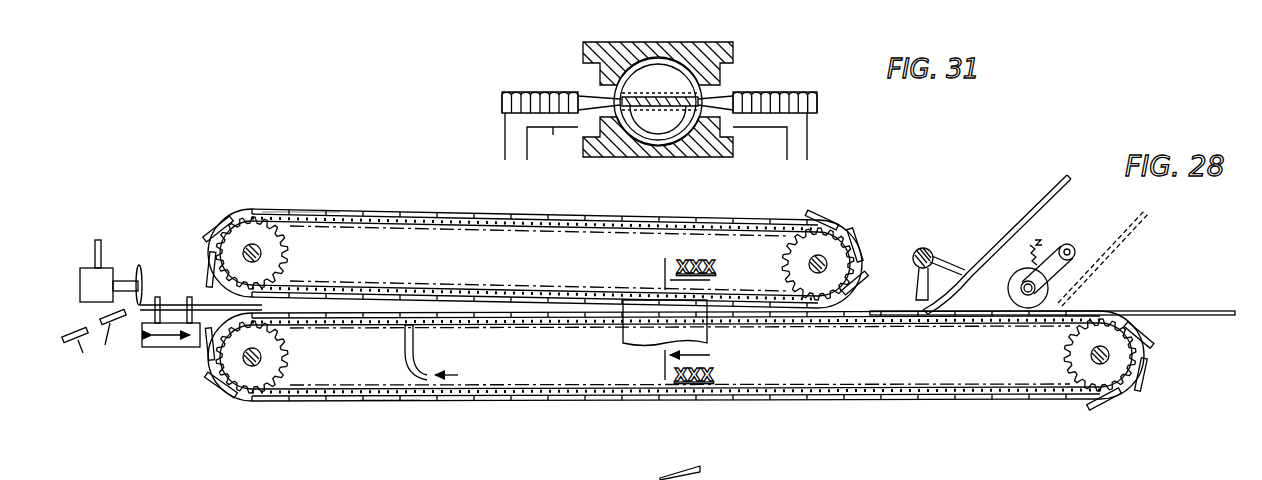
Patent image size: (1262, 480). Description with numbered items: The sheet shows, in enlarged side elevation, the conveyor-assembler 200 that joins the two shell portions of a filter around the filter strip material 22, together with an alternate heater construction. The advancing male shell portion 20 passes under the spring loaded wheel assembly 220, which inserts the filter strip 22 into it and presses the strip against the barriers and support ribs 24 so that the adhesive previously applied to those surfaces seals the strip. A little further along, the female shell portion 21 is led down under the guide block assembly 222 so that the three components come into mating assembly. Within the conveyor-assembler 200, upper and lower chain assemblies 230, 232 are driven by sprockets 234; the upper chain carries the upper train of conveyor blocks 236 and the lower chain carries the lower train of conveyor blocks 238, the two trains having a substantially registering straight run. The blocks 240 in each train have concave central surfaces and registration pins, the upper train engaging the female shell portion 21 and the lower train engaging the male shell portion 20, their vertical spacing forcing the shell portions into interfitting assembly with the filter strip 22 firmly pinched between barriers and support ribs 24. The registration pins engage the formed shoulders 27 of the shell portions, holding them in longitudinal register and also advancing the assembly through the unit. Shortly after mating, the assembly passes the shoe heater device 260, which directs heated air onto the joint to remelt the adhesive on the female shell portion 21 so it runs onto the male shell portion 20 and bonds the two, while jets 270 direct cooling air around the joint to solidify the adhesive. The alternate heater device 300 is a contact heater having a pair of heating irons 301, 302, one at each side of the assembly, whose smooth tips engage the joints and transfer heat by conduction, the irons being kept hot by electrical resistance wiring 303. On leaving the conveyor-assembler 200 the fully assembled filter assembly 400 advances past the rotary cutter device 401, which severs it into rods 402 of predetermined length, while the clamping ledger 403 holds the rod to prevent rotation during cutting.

In FIG. 31, the male shell portion 20 is at (685, 136).
In FIG. 28, the male shell portion 20 is at (1193, 311).
In FIG. 31, the female shell portion 21 is at (693, 73).
In FIG. 28, the female shell portion 21 is at (1040, 201).
In FIG. 31, the filter strip material 22 is at (628, 138).
In FIG. 28, the filter strip material 22 is at (1112, 256).
In FIG. 28, the support ribs 24 is at (702, 469).
In FIG. 28, the formed shoulders 27 is at (617, 469).
In FIG. 28, the conveyor-assembler 200 is at (357, 181).
In FIG. 28, the spring loaded wheel assembly 220 is at (1010, 278).
In FIG. 28, the guide block assembly 222 is at (965, 266).
In FIG. 28, the upper chain assembly 230 is at (393, 232).
In FIG. 28, the lower chain assembly 232 is at (997, 386).
In FIG. 28, the sprockets 234 is at (292, 250).
In FIG. 28, the upper train of conveyor blocks 236 is at (300, 207).
In FIG. 28, the lower train of conveyor blocks 238 is at (399, 404).
In FIG. 28, the conveyor blocks 240 is at (206, 256).
In FIG. 28, the shoe heater device 260 is at (712, 336).
In FIG. 28, the jets 270 is at (414, 350).
In FIG. 31, the heater device 300 is at (576, 52).
In FIG. 31, the heating iron 301 is at (722, 93).
In FIG. 31, the heating iron 302 is at (588, 93).
In FIG. 31, the electrical resistance wiring 303 is at (553, 136).
In FIG. 28, the filter assembly 400 is at (166, 303).
In FIG. 28, the rotary cutter device 401 is at (127, 270).
In FIG. 28, the rods 402 is at (94, 344).
In FIG. 28, the clamping ledger 403 is at (170, 350).